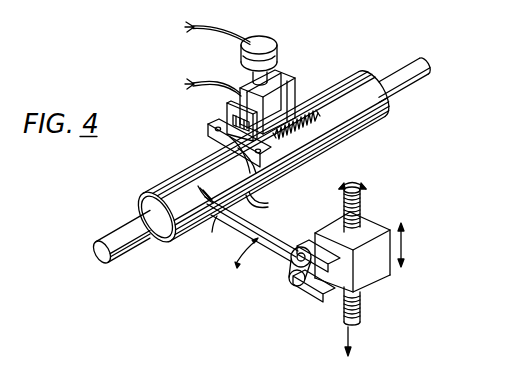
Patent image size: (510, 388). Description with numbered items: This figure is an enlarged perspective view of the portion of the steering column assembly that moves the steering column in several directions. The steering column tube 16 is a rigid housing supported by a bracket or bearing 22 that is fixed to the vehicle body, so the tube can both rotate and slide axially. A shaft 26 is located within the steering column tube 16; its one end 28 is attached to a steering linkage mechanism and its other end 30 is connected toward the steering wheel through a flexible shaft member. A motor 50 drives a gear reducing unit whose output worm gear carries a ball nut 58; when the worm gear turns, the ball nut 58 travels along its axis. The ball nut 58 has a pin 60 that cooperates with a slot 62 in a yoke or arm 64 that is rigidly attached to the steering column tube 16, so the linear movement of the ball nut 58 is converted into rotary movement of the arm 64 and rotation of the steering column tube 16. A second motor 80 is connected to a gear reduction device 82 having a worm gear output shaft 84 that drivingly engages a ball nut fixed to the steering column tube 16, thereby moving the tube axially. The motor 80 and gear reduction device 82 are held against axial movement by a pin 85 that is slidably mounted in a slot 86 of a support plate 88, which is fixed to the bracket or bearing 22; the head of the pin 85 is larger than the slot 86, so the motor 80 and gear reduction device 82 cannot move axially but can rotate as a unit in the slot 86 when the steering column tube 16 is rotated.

The steering column tube 16 is at (343, 80).
The bracket or bearing 22 is at (206, 143).
The shaft 26 is at (123, 234).
The end of shaft 28 is at (100, 250).
The other end of shaft 30 is at (427, 71).
The motor 50 is at (357, 279).
The ball nut 58 is at (382, 262).
The pin 60 is at (292, 281).
The slot 62 is at (310, 250).
The yoke or arm 64 is at (284, 240).
The motor 80 is at (278, 47).
The gear reduction device 82 is at (245, 99).
The worm gear output shaft 84 is at (314, 116).
The pin 85 is at (234, 119).
The slot 86 is at (246, 160).
The support plate 88 is at (214, 150).